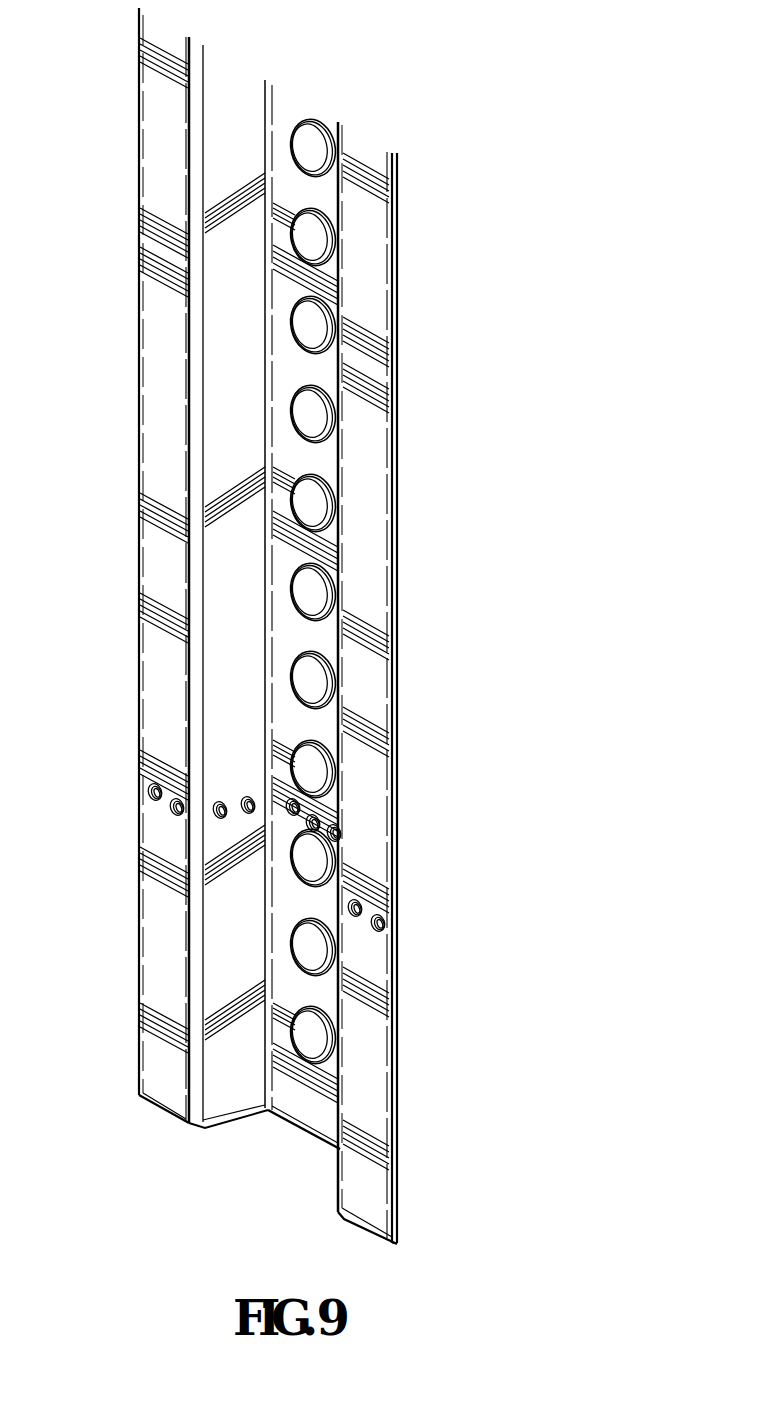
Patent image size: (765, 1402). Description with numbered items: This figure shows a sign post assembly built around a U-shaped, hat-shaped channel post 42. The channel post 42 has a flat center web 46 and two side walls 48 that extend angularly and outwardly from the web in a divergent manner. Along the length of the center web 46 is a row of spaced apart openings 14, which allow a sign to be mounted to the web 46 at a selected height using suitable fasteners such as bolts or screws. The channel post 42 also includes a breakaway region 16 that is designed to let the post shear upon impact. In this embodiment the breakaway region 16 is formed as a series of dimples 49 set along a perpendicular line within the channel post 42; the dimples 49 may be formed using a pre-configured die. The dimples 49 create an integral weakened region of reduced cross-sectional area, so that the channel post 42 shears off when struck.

The U-shaped channel post 42 is at (343, 626).
The openings 14 is at (315, 332).
The flat center web 46 is at (312, 458).
The side walls 48 is at (160, 670).
The dimples 49 is at (148, 793).
The breakaway region 16 is at (410, 887).